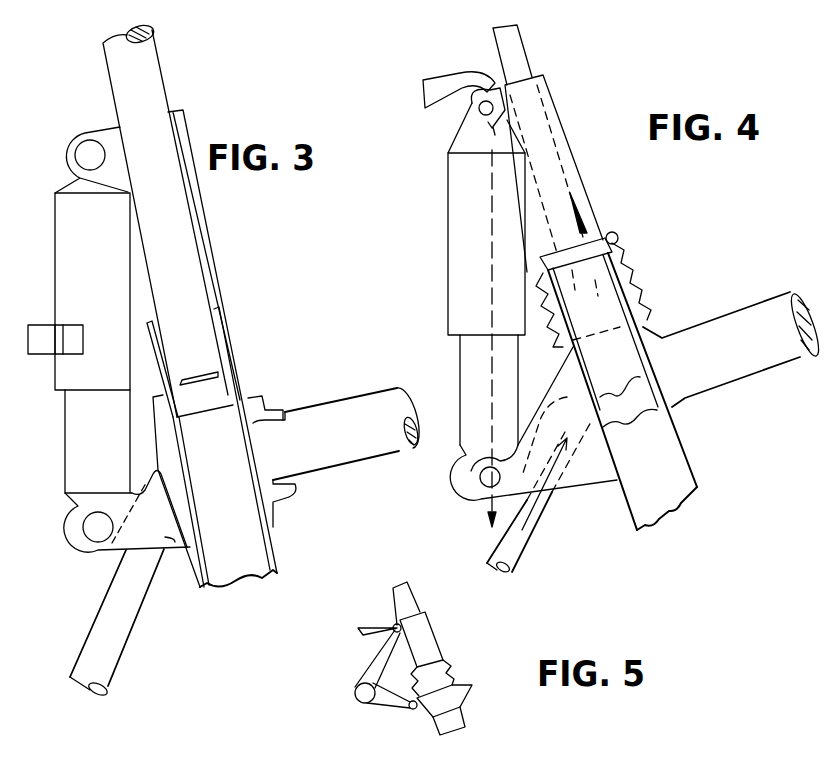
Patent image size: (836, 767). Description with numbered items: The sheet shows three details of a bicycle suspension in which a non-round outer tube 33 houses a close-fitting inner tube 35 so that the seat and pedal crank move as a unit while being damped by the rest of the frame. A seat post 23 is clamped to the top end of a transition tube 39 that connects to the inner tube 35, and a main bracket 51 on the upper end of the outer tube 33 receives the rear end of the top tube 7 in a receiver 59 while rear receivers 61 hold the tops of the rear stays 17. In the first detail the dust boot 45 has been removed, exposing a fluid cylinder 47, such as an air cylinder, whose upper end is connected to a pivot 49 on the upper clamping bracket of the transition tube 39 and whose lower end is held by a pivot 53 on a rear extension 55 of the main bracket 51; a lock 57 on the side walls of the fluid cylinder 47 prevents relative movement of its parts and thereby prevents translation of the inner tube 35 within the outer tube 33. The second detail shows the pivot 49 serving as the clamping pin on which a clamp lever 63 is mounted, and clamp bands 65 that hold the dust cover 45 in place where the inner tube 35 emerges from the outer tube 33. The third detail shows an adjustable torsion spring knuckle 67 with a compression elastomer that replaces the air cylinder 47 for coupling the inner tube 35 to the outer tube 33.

In FIG. 3, the top tube 7 is at (380, 462).
In FIG. 3, the rear stays 17 is at (135, 618).
In FIG. 3, the seat post 23 is at (167, 90).
In FIG. 4, the seat post 23 is at (528, 65).
In FIG. 5, the seat post 23 is at (413, 600).
In FIG. 3, the outer tube 33 is at (278, 552).
In FIG. 4, the outer tube 33 is at (648, 453).
In FIG. 5, the outer tube 33 is at (463, 722).
In FIG. 3, the inner tube 35 is at (233, 362).
In FIG. 3, the transition tube 39 is at (213, 257).
In FIG. 4, the transition tube 39 is at (572, 163).
In FIG. 5, the transition tube 39 is at (437, 640).
In FIG. 4, the dust boot 45 is at (647, 313).
In FIG. 5, the dust boot 45 is at (447, 668).
In FIG. 3, the fluid cylinder 47 is at (93, 343).
In FIG. 4, the fluid cylinder 47 is at (448, 255).
In FIG. 3, the pivot 49 is at (75, 160).
In FIG. 4, the pivot 49 is at (470, 113).
In FIG. 5, the pivot 49 is at (395, 625).
In FIG. 3, the main bracket 51 is at (275, 505).
In FIG. 5, the main bracket 51 is at (463, 708).
In FIG. 3, the pivot 53 is at (78, 528).
In FIG. 4, the pivot 53 is at (482, 498).
In FIG. 5, the pivot 53 is at (423, 717).
In FIG. 3, the rear extension 55 is at (112, 550).
In FIG. 3, the lock 57 is at (60, 365).
In FIG. 3, the receiver 59 is at (265, 458).
In FIG. 3, the rear receivers 61 is at (176, 547).
In FIG. 4, the clamp lever 63 is at (443, 73).
In FIG. 5, the clamp lever 63 is at (360, 622).
In FIG. 4, the clamp bands 65 is at (595, 233).
In FIG. 5, the adjustable torsion spring knuckle 67 is at (370, 665).